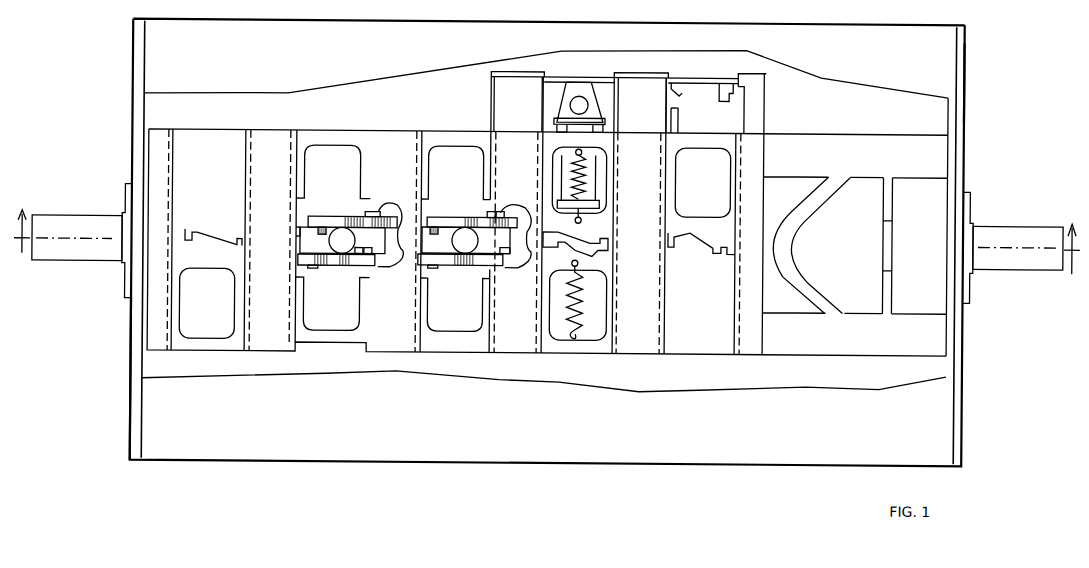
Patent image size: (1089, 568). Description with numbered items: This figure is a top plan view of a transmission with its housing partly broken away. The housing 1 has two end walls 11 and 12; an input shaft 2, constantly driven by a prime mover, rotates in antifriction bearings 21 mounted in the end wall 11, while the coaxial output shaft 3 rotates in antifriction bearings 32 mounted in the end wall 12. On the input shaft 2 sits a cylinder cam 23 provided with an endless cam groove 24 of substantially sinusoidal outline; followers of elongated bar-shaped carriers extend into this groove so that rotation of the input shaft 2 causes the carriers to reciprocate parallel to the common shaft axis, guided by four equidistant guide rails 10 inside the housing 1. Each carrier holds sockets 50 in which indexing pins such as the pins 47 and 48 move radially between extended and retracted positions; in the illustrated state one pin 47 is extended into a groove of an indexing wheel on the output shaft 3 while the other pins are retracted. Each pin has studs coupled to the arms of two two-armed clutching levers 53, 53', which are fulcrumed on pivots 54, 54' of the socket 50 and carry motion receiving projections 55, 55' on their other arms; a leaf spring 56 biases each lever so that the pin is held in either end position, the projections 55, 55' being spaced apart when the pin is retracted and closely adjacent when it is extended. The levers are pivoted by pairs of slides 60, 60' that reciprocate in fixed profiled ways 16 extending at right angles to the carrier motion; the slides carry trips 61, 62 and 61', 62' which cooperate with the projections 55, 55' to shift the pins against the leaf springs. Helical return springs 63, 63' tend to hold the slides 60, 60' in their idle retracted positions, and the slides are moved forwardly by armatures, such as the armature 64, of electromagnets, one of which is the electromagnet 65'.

The housing 1 is at (355, 463).
The input shaft 2 is at (1030, 223).
The output shaft 3 is at (55, 220).
The guide rails 10 is at (855, 215).
The end wall 11 is at (964, 80).
The end wall 12 is at (133, 412).
The profiled ways 16 is at (393, 138).
The antifriction bearings 21 is at (970, 213).
The cylinder cam 23 is at (860, 245).
The endless cam groove 24 is at (793, 192).
The antifriction bearings 32 is at (125, 204).
The indexing pin 47 is at (463, 247).
The indexing pin 48 is at (341, 247).
The socket 50 is at (302, 240).
The clutching lever 53 is at (516, 250).
The clutching lever 53' is at (412, 211).
The pivot 54 is at (400, 276).
The pivot 54' is at (444, 200).
The motion receiving projection 55 is at (391, 248).
The motion receiving projection 55' is at (287, 220).
The leaf spring 56 is at (476, 222).
The slide 60 is at (458, 196).
The slide 60' is at (513, 188).
The trip 61 is at (449, 164).
The trip 61' is at (690, 255).
The trip 62 is at (457, 161).
The trip 62' is at (720, 262).
The helical return spring 63 is at (594, 300).
The helical return spring 63' is at (592, 220).
The armature 64 is at (580, 90).
The electromagnet 65' is at (599, 186).